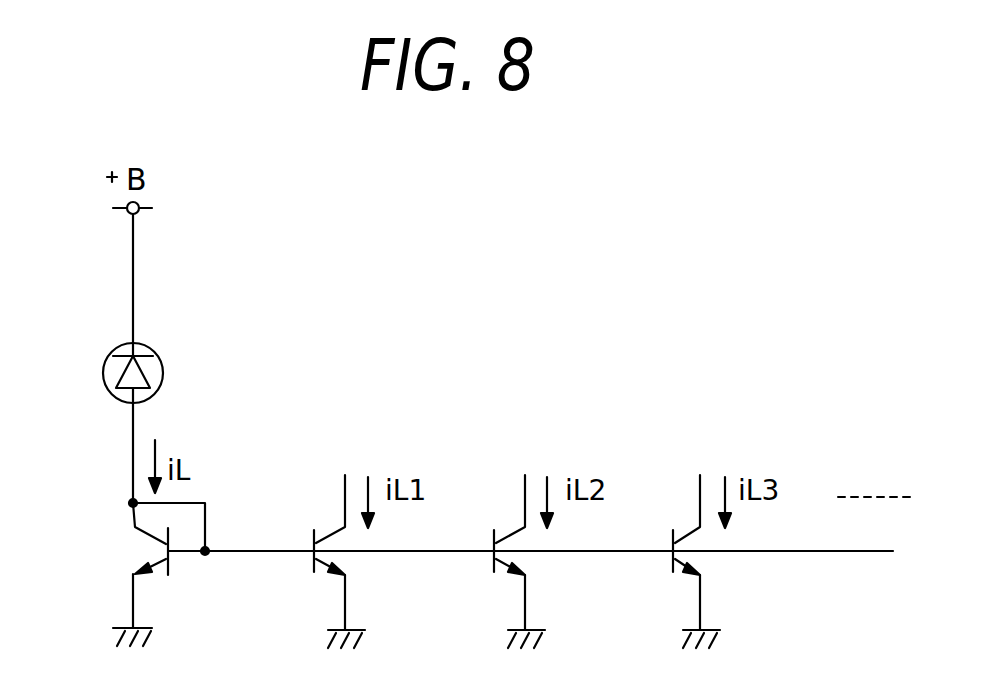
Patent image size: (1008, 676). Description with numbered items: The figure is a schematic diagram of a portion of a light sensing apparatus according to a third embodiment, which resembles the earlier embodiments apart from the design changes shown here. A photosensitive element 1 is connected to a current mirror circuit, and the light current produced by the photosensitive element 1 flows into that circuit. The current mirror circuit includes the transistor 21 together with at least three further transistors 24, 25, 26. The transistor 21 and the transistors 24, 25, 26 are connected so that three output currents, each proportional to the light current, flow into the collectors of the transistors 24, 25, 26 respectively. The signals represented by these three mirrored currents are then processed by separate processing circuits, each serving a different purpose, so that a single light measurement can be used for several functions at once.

The photosensitive element 1 is at (103, 378).
The transistor 21 is at (158, 566).
The transistor 24 is at (330, 568).
The transistor 25 is at (512, 568).
The transistor 26 is at (690, 568).